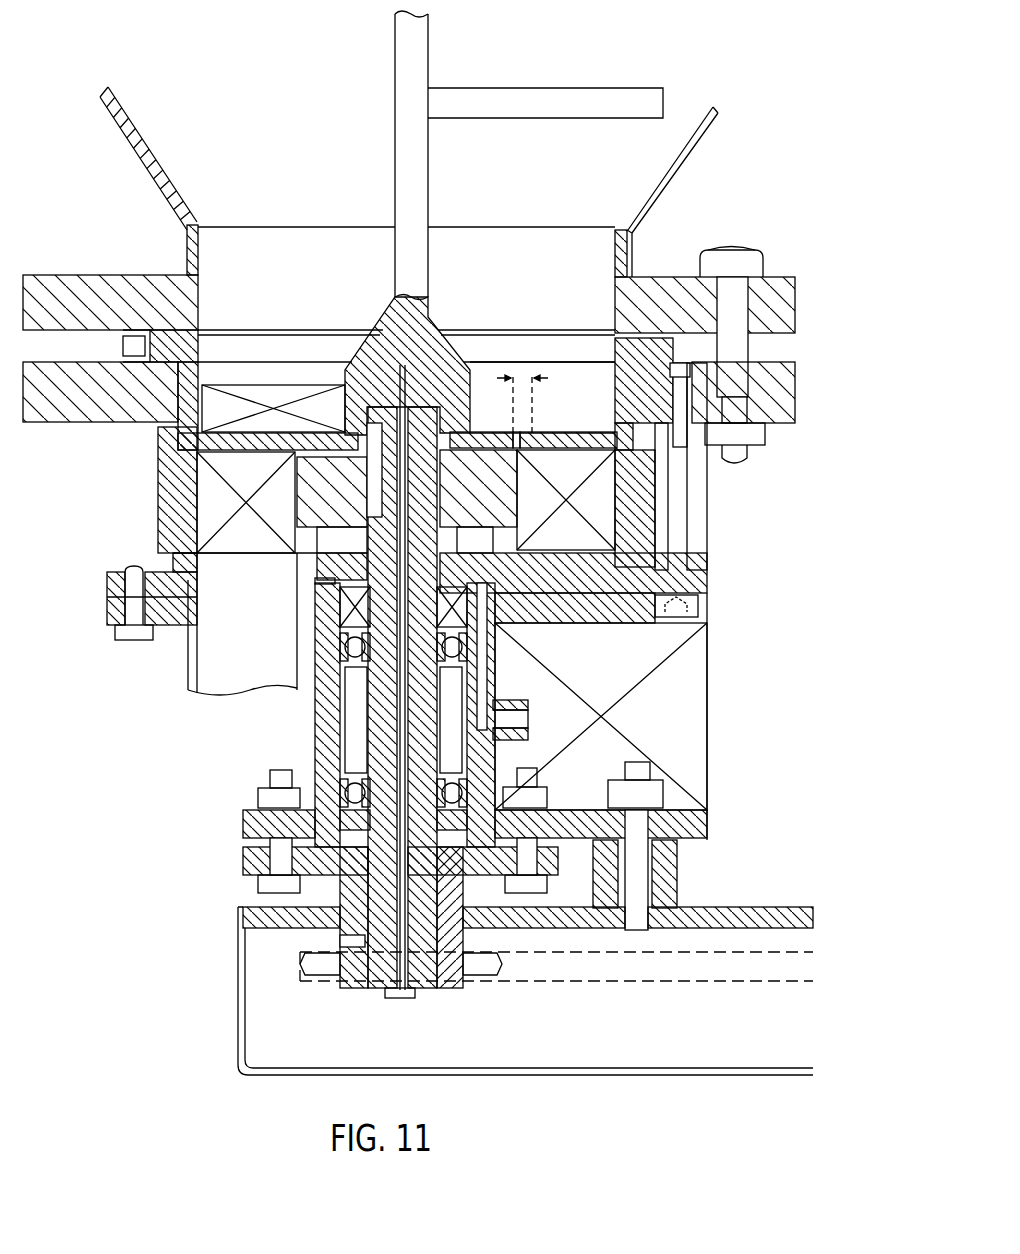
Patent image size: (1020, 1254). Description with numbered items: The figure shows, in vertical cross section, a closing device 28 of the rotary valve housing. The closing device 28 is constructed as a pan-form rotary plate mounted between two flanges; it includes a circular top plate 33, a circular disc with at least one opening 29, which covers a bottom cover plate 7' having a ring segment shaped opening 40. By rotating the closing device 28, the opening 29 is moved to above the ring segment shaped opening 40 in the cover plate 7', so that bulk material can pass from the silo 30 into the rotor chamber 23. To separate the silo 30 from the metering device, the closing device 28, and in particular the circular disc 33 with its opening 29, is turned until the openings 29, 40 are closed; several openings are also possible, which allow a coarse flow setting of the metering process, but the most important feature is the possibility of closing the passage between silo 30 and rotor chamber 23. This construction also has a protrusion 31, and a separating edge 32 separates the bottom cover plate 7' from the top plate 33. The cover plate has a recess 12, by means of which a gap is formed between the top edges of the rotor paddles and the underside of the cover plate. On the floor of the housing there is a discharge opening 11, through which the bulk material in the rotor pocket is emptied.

The silo 30 is at (632, 210).
The protrusion 31 is at (520, 372).
The separating edge 32 is at (478, 428).
The circular top plate 33 is at (505, 433).
The closing device 28 is at (624, 372).
The opening 29 is at (587, 437).
The recess 12 is at (520, 438).
The ring segment shaped opening 40 is at (518, 453).
The rotor chamber 23 is at (608, 492).
The bottom cover plate 7' is at (246, 501).
The discharge opening 11 is at (214, 661).